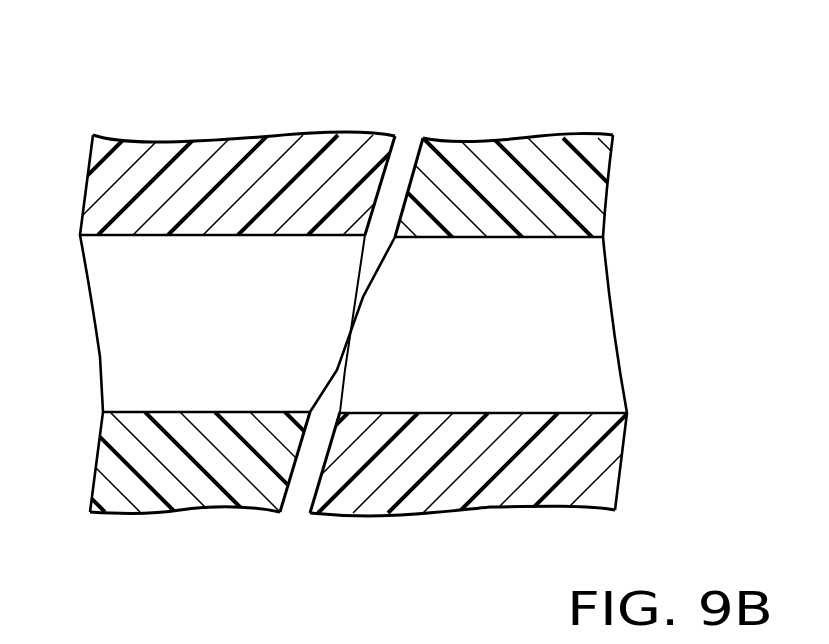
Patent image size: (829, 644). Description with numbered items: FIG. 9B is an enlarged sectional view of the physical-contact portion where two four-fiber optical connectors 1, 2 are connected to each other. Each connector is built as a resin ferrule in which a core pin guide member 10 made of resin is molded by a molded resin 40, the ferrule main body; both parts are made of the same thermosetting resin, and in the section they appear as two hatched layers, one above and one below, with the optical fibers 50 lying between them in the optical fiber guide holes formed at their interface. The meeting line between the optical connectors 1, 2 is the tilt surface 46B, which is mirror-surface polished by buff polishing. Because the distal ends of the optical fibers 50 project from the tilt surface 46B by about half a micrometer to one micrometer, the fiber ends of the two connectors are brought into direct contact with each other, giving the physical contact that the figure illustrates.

The optical connector 1 is at (206, 107).
The optical connector 2 is at (530, 108).
The core pin guide member 10 is at (570, 158).
The molded resin 40 is at (310, 141).
The tilt surface 46B is at (412, 172).
The optical fibers 50 is at (130, 355).